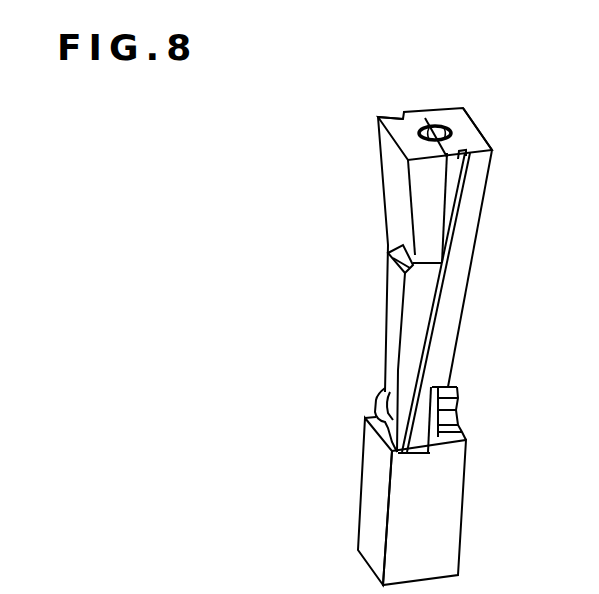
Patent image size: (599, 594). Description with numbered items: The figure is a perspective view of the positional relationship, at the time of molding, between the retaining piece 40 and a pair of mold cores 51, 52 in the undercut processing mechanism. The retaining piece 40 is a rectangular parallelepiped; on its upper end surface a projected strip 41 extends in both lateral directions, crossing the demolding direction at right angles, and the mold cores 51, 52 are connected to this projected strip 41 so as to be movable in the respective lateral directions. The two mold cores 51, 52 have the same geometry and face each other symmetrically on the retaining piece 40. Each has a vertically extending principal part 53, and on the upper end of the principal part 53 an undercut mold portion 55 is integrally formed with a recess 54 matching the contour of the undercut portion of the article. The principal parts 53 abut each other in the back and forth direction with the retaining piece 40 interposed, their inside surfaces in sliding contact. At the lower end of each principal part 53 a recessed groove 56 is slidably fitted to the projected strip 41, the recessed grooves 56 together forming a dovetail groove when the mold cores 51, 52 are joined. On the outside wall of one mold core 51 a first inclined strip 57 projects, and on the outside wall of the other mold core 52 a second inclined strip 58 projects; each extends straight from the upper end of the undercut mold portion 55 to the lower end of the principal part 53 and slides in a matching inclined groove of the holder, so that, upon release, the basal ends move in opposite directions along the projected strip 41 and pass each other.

The retaining piece 40 is at (473, 504).
The projected strip 41 is at (457, 401).
The mold core 51 is at (485, 223).
The mold core 52 is at (383, 210).
The principal part 53 is at (388, 335).
The recess 54 is at (518, 126).
The undercut mold portion 55 is at (380, 130).
The recessed groove 56 is at (367, 419).
The first inclined strip 57 is at (458, 270).
The second inclined strip 58 is at (404, 113).